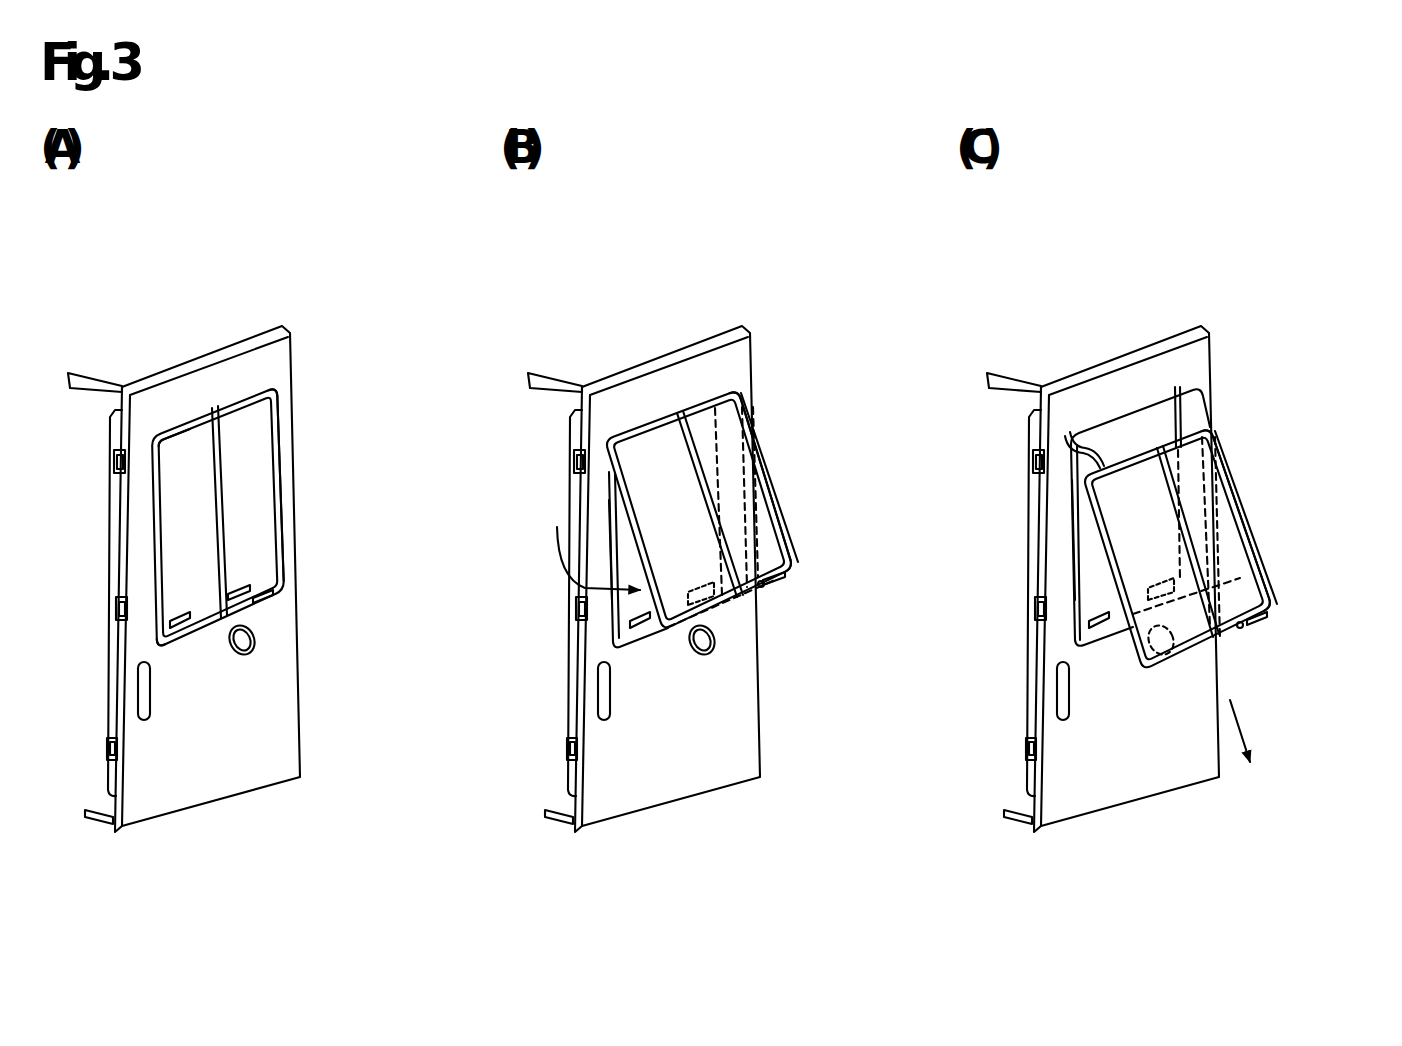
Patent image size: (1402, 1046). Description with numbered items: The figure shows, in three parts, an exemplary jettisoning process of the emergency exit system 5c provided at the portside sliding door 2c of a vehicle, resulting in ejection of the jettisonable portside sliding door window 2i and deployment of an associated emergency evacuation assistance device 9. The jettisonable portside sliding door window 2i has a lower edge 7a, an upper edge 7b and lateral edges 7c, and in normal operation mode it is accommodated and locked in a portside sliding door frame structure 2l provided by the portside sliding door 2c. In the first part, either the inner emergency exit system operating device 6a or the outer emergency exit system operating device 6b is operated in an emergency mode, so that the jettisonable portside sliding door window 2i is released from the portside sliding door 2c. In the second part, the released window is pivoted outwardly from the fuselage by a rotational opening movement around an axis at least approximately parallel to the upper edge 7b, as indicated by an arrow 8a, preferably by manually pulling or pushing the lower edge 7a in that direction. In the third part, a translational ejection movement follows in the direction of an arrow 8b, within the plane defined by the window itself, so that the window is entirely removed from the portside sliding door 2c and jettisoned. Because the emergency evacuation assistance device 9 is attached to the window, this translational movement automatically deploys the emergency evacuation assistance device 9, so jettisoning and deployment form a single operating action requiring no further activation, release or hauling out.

The portside sliding door 2c is at (172, 350).
The jettisonable portside sliding door window 2i is at (240, 427).
The portside sliding door frame structure 2l is at (179, 434).
The emergency exit system 5c is at (299, 450).
The inner emergency exit system operating device 6a is at (232, 585).
The outer emergency exit system operating device 6b is at (272, 606).
The lower edge 7a is at (152, 652).
The upper edge 7b is at (287, 386).
The lateral edges 7c is at (274, 381).
The arrow 8a is at (563, 562).
The arrow 8b is at (1240, 723).
The emergency evacuation assistance device 9 is at (1068, 446).